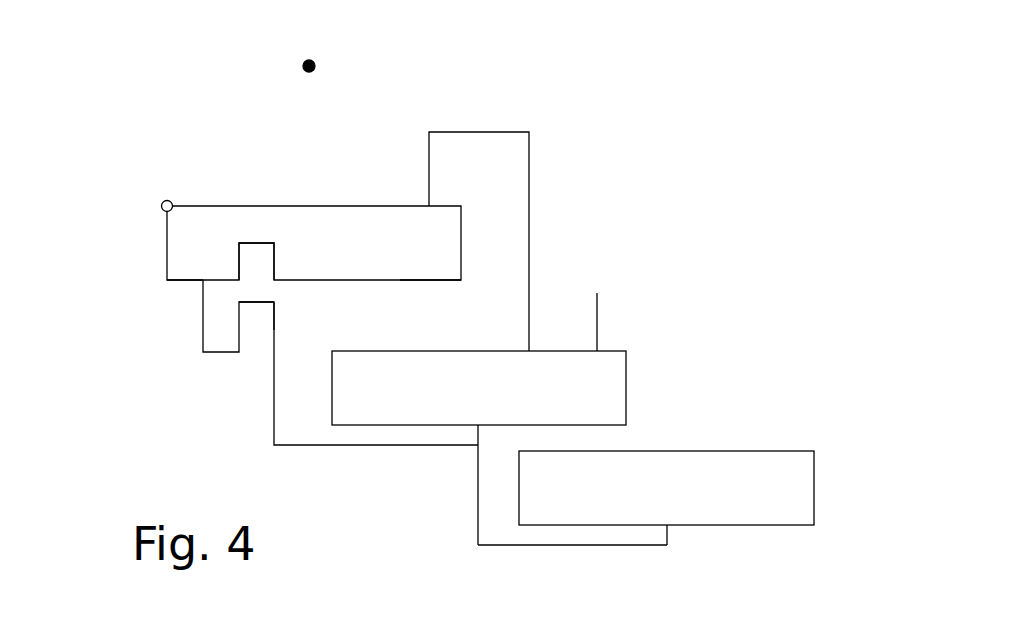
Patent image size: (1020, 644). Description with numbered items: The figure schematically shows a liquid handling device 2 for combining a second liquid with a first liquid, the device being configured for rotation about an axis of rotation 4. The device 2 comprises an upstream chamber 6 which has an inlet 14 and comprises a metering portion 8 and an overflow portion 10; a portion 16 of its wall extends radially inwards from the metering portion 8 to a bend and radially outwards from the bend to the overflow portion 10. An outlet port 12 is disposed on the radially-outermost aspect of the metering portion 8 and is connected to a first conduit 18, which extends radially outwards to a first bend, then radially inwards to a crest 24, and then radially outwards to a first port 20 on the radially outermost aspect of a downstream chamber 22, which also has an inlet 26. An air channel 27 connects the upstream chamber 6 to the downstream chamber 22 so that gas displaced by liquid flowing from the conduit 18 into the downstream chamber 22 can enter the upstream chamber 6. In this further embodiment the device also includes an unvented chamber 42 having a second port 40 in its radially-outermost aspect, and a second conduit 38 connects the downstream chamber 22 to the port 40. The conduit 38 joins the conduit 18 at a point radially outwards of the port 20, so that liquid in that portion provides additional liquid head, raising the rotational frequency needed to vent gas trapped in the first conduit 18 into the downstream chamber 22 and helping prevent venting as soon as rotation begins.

The liquid handling device 2 is at (95, 173).
The axis of rotation 4 is at (318, 54).
The upstream chamber 6 is at (167, 250).
The metering portion 8 is at (157, 281).
The overflow portion 10 is at (448, 283).
The outlet port 12 is at (197, 283).
The inlet 14 is at (168, 200).
The portion of a wall 16 is at (254, 248).
The first conduit 18 is at (274, 395).
The first port 20 is at (488, 433).
The downstream chamber 22 is at (626, 373).
The crest 24 is at (280, 307).
The inlet 26 is at (597, 313).
The air channel 27 is at (529, 183).
The second conduit 38 is at (508, 546).
The second port 40 is at (671, 529).
The unvented chamber 42 is at (720, 450).